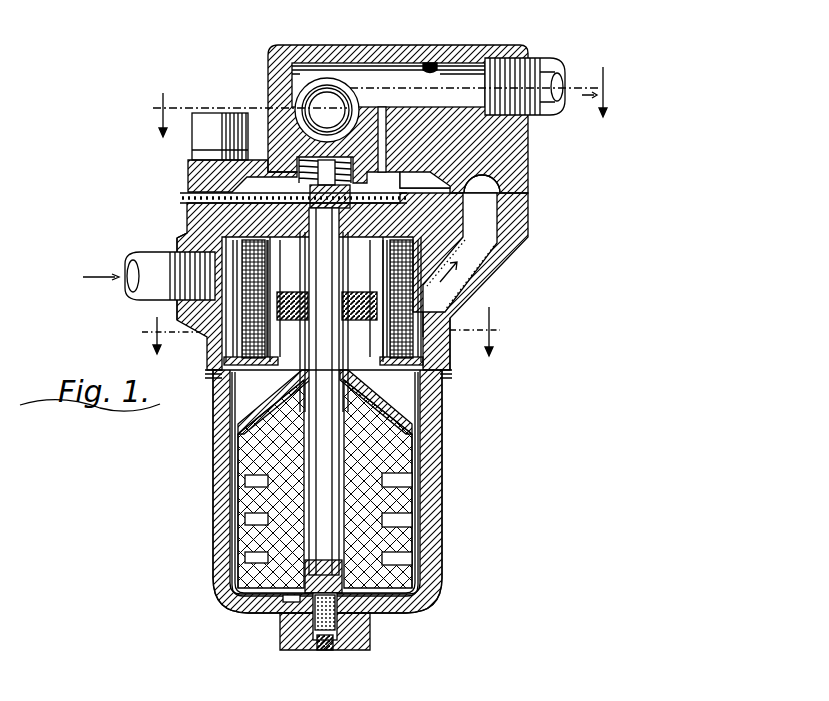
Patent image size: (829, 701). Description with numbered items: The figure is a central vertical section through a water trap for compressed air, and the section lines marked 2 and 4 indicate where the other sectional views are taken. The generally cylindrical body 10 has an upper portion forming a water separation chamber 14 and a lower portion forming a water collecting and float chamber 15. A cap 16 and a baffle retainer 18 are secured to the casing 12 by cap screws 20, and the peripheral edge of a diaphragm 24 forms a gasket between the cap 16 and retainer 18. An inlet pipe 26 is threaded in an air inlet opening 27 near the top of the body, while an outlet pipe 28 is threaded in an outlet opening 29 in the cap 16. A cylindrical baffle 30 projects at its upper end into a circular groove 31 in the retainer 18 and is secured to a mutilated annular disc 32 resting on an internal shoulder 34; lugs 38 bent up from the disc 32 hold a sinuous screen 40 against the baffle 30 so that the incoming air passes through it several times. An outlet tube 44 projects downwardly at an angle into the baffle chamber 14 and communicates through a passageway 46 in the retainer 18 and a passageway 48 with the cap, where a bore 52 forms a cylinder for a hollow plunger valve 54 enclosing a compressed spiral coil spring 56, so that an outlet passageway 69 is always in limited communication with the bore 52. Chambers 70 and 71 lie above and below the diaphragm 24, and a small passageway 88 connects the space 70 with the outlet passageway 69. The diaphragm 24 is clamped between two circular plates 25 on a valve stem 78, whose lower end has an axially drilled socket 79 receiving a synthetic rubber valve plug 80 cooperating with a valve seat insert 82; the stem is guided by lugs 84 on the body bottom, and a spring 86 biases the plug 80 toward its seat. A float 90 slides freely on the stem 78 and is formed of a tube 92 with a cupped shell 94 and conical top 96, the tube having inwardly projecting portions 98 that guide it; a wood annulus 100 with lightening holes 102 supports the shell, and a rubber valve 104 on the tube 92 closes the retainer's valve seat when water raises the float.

The section line 2- 2 is at (383, 100).
The section line 4- 4 is at (323, 331).
The body 10 is at (433, 570).
The casing 12 is at (433, 470).
The water separation chamber 14 is at (450, 313).
The water collecting and float chamber 15 is at (410, 408).
The cap 16 is at (510, 143).
The baffle retainer 18 is at (530, 222).
The cap screws 20 is at (208, 128).
The diaphragm 24 is at (176, 196).
The circular plates 25 is at (213, 188).
The pipe 26 is at (140, 260).
The air inlet opening 27 is at (168, 252).
The outlet pipe 28 is at (557, 68).
The outlet opening 29 is at (540, 46).
The cylindrical baffle 30 is at (260, 280).
The circular groove 31 is at (388, 242).
The mutilated annular disc 32 is at (240, 411).
The internal shoulder 34 is at (450, 353).
The lugs 38 is at (425, 343).
The screen 40 is at (243, 337).
The outlet tube 44 is at (467, 257).
The passageway 46 is at (486, 207).
The passageway 48 is at (510, 182).
The bore 52 is at (392, 66).
The plunger valve 54 is at (314, 88).
The compressed spiral coil spring 56 is at (331, 97).
The outlet passageway 69 is at (458, 16).
The chamber 70 is at (470, 182).
The chamber 71 is at (310, 222).
The valve stem 78 is at (318, 268).
The axially drilled socket 79 is at (295, 625).
The valve plug 80 is at (340, 620).
The valve seat insert 82 is at (335, 650).
The lugs 84 is at (297, 613).
The spring 86 is at (302, 157).
The passageway 88 is at (388, 112).
The float 90 is at (236, 438).
The tube 92 is at (298, 333).
The cupped shell 94 is at (400, 555).
The conical top 96 is at (445, 395).
The inwardly projecting portions 98 is at (250, 557).
The annulus 100 is at (248, 485).
The holes 102 is at (248, 493).
The valve 104 is at (373, 280).